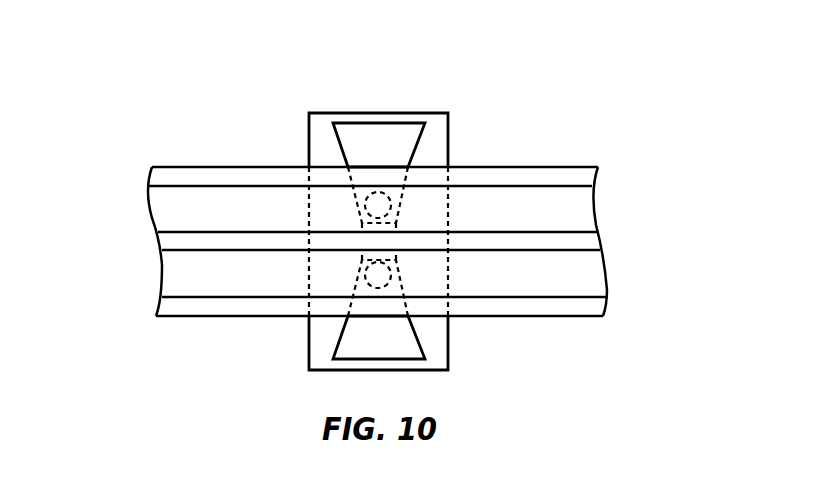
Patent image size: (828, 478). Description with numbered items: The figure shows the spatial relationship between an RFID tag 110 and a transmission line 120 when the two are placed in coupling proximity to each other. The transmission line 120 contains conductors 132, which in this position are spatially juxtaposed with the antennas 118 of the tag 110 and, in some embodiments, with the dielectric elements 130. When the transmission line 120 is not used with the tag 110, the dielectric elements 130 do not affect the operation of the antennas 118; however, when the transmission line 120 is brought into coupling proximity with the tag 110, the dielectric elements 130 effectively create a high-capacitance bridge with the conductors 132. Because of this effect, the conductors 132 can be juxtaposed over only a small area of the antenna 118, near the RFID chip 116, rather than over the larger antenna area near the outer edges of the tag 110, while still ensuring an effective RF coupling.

The tag 110 is at (428, 113).
The RFID chip 116 is at (362, 243).
The antenna 118 is at (340, 140).
The transmission line 120 is at (523, 167).
The dielectric element 130 is at (398, 199).
The conductor 132 is at (157, 212).